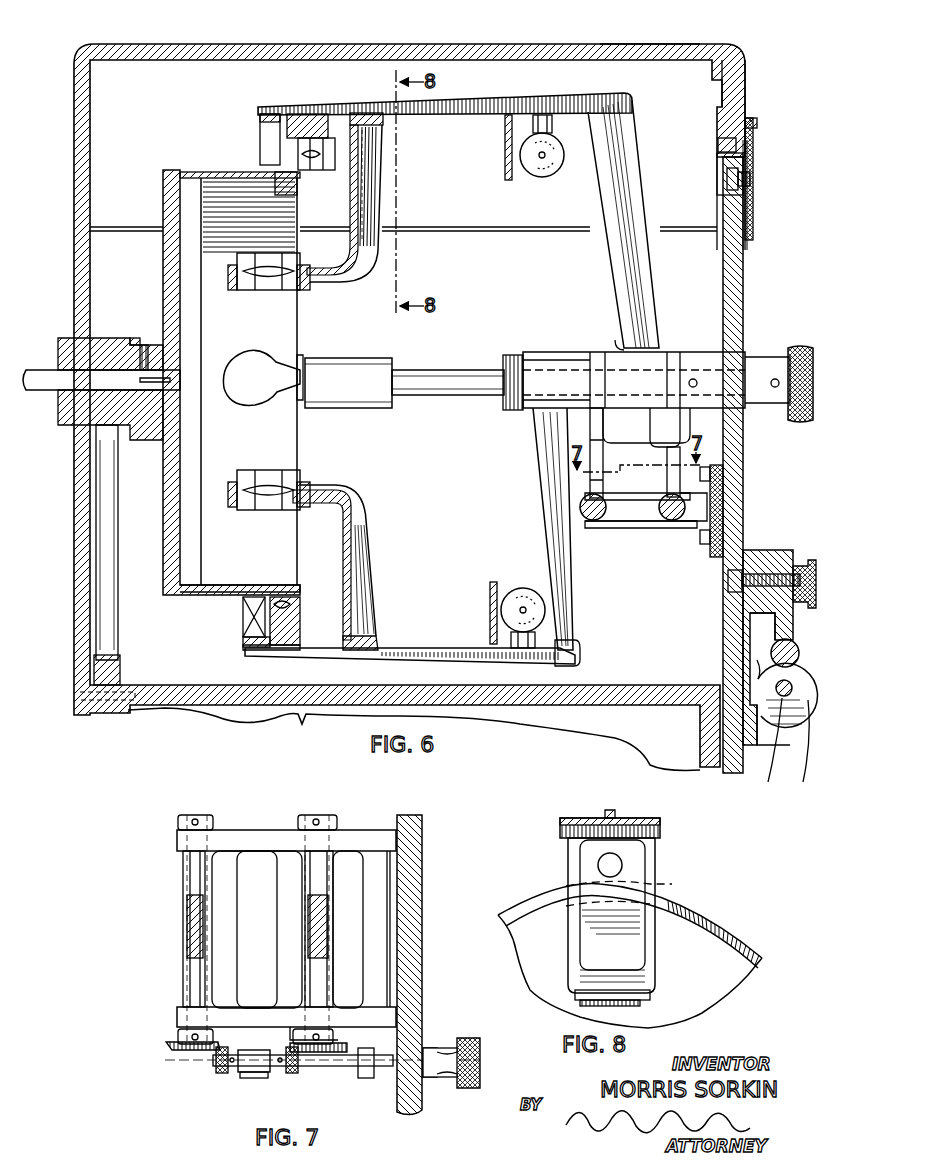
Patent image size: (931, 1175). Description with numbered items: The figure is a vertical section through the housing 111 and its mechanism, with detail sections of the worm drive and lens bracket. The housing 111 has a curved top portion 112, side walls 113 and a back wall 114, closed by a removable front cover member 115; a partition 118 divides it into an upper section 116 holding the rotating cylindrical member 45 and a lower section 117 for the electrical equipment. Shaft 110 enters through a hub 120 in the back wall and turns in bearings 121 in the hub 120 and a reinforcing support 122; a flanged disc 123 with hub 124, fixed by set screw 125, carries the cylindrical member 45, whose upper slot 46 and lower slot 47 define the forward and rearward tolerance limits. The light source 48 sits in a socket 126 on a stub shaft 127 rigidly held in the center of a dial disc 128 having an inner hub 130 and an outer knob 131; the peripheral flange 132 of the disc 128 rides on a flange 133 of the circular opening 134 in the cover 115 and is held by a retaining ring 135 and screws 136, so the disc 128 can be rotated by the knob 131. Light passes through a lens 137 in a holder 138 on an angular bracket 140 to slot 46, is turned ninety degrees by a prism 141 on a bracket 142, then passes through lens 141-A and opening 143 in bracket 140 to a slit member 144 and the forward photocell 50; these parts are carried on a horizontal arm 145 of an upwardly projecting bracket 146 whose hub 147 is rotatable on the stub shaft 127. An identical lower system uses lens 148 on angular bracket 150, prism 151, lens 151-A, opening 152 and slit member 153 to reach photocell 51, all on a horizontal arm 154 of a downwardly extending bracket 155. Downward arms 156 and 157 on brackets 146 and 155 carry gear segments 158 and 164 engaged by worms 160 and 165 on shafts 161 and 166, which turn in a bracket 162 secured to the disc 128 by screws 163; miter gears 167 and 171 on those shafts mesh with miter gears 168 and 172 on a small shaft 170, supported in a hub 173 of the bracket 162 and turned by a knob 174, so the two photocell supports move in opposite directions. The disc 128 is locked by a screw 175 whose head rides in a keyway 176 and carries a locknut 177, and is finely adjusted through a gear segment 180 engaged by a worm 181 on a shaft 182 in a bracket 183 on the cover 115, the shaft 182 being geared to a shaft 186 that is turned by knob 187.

In FIG. 6, the cylindrical member 45 is at (224, 174).
In FIG. 8, the cylindrical member 45 is at (716, 918).
In FIG. 6, the slot 46 is at (292, 186).
In FIG. 8, the slot 46 is at (630, 888).
In FIG. 6, the slot 47 is at (258, 584).
In FIG. 6, the light source 48 is at (266, 354).
In FIG. 6, the forward photocell 50 is at (550, 170).
In FIG. 6, the photocell 51 is at (514, 590).
In FIG. 6, the shaft 110 is at (40, 370).
In FIG. 6, the housing 111 is at (230, 44).
In FIG. 6, the curved top portion 112 is at (628, 44).
In FIG. 6, the side walls 113 is at (106, 254).
In FIG. 6, the back wall 114 is at (92, 224).
In FIG. 6, the front cover member 115 is at (738, 102).
In FIG. 6, the upper section 116 is at (148, 102).
In FIG. 6, the lower section 117 is at (670, 740).
In FIG. 6, the partition 118 is at (648, 684).
In FIG. 6, the hub 120 is at (68, 338).
In FIG. 6, the bearings 121 is at (58, 400).
In FIG. 6, the reinforcing member or support 122 is at (112, 502).
In FIG. 6, the flanged disc 123 is at (163, 190).
In FIG. 6, the hub 124 is at (146, 344).
In FIG. 6, the set screw 125 is at (138, 344).
In FIG. 6, the socket 126 is at (352, 358).
In FIG. 6, the stub shaft 127 is at (448, 370).
In FIG. 6, the circular flanged disc or dial member 128 is at (730, 300).
In FIG. 7, the circular flanged disc or dial member 128 is at (416, 878).
In FIG. 6, the hub 130 is at (716, 352).
In FIG. 6, the knob or handle 131 is at (806, 346).
In FIG. 6, the peripheral flange 132 is at (730, 160).
In FIG. 6, the flange 133 is at (716, 142).
In FIG. 6, the circular opening 134 is at (716, 152).
In FIG. 6, the retaining ring 135 is at (756, 118).
In FIG. 6, the screws 136 is at (756, 134).
In FIG. 6, the lens 137 is at (284, 290).
In FIG. 6, the holder 138 is at (246, 290).
In FIG. 8, the holder 138 is at (650, 992).
In FIG. 6, the angular bracket 140 is at (370, 222).
In FIG. 8, the angular bracket 140 is at (656, 866).
In FIG. 6, the prism 141 is at (292, 160).
In FIG. 6, the second lens 141-A is at (300, 138).
In FIG. 6, the bracket 142 is at (260, 118).
In FIG. 6, the opening 143 is at (360, 162).
In FIG. 8, the opening 143 is at (622, 862).
In FIG. 6, the slit member 144 is at (505, 140).
In FIG. 6, the horizontally disposed arm 145 is at (470, 104).
In FIG. 8, the horizontally disposed arm 145 is at (616, 814).
In FIG. 6, the supporting bracket or arm 146 is at (641, 240).
In FIG. 6, the hub 147 is at (608, 410).
In FIG. 6, the lens 148 is at (278, 458).
In FIG. 6, the angular supporting bracket 150 is at (366, 562).
In FIG. 6, the prism 151 is at (244, 616).
In FIG. 6, the lens 151-A is at (286, 650).
In FIG. 6, the opening 152 is at (352, 600).
In FIG. 6, the slit member 153 is at (490, 588).
In FIG. 6, the horizontally disposed arm 154 is at (428, 648).
In FIG. 6, the supporting bracket 155 is at (538, 458).
In FIG. 6, the downwardly projecting arm 156 is at (676, 446).
In FIG. 7, the downwardly projecting arm 156 is at (184, 932).
In FIG. 6, the downwardly projecting arm 157 is at (598, 452).
In FIG. 7, the downwardly projecting arm 157 is at (186, 906).
In FIG. 6, the gear segment 158 is at (624, 484).
In FIG. 6, the screw or worm 160 is at (660, 514).
In FIG. 7, the screw or worm 160 is at (332, 928).
In FIG. 6, the shaft 161 is at (680, 524).
In FIG. 7, the shaft 161 is at (332, 978).
In FIG. 6, the bracket 162 is at (700, 528).
In FIG. 7, the bracket 162 is at (356, 834).
In FIG. 6, the screws 163 is at (712, 548).
In FIG. 6, the gear segment 164 is at (594, 498).
In FIG. 6, the screw or worm 165 is at (606, 508).
In FIG. 6, the shaft 166 is at (600, 520).
In FIG. 7, the shaft 166 is at (188, 972).
In FIG. 7, the miter gear 167 is at (340, 1036).
In FIG. 7, the miter gear 168 is at (296, 1074).
In FIG. 7, the small shaft 170 is at (350, 1068).
In FIG. 7, the miter gear 171 is at (176, 1050).
In FIG. 7, the miter gear 172 is at (222, 1074).
In FIG. 7, the hub 173 is at (254, 1078).
In FIG. 7, the actuating knob or handle 174 is at (472, 1040).
In FIG. 6, the screw 175 is at (758, 552).
In FIG. 6, the keyway 176 is at (750, 178).
In FIG. 6, the locknut 177 is at (808, 560).
In FIG. 6, the gear segment 180 is at (788, 640).
In FIG. 6, the screw or worm 181 is at (771, 653).
In FIG. 6, the shaft 182 is at (776, 686).
In FIG. 6, the supporting bracket 183 is at (770, 745).
In FIG. 6, the shaft 186 is at (760, 750).
In FIG. 6, the knob or handle 187 is at (794, 751).